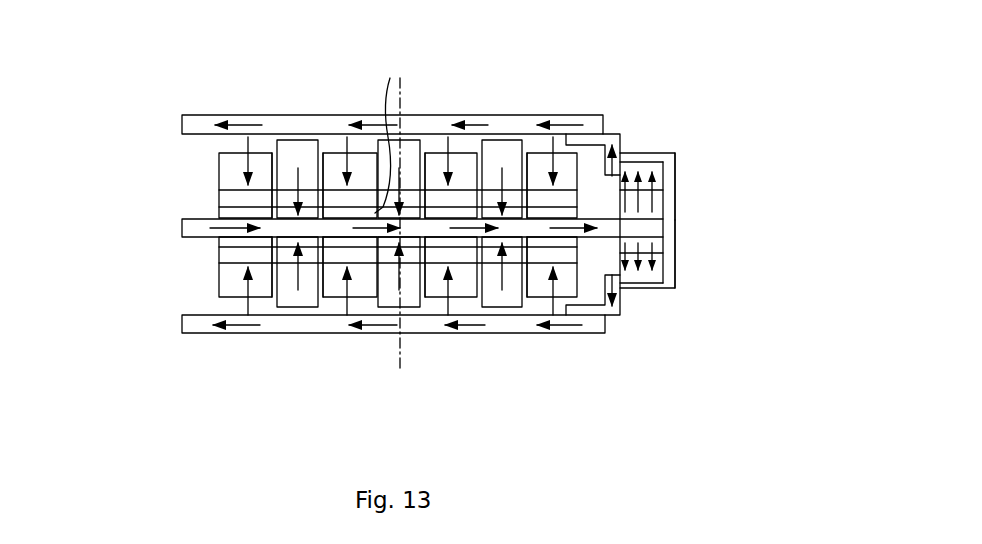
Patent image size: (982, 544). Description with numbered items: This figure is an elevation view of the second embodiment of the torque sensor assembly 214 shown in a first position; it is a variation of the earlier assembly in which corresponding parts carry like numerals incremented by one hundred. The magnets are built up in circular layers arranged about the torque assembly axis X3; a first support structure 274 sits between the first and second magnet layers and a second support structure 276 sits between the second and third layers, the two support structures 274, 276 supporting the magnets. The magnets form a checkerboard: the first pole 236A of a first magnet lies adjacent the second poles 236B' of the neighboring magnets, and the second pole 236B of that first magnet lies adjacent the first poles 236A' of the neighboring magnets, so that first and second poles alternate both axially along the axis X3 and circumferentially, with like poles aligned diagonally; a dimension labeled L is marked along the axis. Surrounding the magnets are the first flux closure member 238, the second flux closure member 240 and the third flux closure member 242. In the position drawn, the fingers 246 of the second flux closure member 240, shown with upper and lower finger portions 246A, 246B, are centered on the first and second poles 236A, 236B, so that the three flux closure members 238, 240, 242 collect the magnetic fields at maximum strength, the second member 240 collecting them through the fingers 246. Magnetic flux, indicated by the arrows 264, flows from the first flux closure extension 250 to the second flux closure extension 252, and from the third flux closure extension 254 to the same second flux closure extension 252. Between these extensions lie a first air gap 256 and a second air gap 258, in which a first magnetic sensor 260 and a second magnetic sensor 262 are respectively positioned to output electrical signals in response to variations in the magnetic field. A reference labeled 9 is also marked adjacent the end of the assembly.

The torque sensor assembly 214 is at (622, 98).
The first flux closure member 238 is at (182, 128).
The second flux closure member 240 is at (182, 224).
The third flux closure member 242 is at (182, 320).
The fingers 246 is at (312, 152).
The upper fin portion 246A is at (272, 198).
The lower fin portion 246B is at (272, 287).
The first support structure 274 is at (218, 204).
The second support structure 276 is at (218, 250).
The first pole of first magnet 236A is at (398, 300).
The second pole of first magnet 236B is at (398, 292).
The first poles of adjacent magnets 236A' is at (380, 237).
The second poles of adjacent magnets 236B' is at (347, 243).
The longitudinal axis L is at (387, 212).
The torque assembly axis X3 is at (403, 97).
The arrows illustrating magnetic field flow 264 is at (570, 115).
The third flux closure extension 254 is at (607, 293).
The first flux closure extension 250 is at (632, 152).
The first air gap 256 is at (660, 195).
The second air gap 258 is at (670, 256).
The second flux closure extension 252 is at (663, 232).
The first magnetic sensor 260 is at (676, 192).
The second magnetic sensor 262 is at (676, 233).
The section line 9 is at (666, 186).